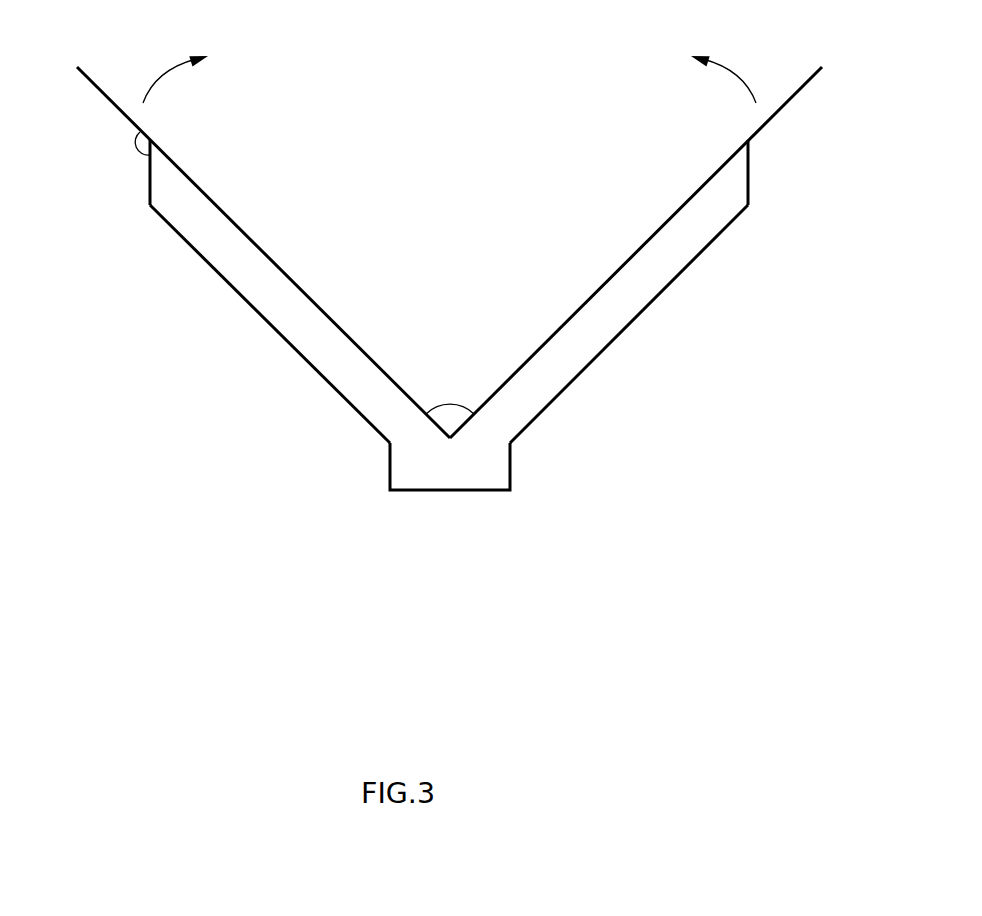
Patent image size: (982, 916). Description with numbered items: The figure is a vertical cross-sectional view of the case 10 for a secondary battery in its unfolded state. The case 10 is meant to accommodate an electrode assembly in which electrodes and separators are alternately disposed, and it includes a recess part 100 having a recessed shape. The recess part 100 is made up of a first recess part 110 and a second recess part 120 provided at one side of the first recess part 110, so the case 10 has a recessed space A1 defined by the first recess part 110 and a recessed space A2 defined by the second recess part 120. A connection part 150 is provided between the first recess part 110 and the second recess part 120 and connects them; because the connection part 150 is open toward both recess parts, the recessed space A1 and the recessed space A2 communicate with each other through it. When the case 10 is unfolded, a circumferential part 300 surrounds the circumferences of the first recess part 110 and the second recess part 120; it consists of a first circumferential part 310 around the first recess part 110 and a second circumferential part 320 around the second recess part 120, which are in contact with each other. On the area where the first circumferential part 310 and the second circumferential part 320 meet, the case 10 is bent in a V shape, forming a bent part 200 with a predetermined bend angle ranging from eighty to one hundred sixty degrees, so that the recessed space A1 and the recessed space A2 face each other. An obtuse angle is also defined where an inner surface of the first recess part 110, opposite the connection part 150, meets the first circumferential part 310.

The case 10 is at (228, 397).
The recess part 100 is at (753, 547).
The first recess part 110 is at (238, 293).
The second recess part 120 is at (661, 293).
The connection part 150 is at (390, 468).
The bent part 200 is at (450, 437).
The circumferential part 300 is at (753, 452).
The first circumferential part 310 is at (178, 168).
The second circumferential part 320 is at (721, 168).
The recessed space A1 is at (278, 287).
The recessed space A2 is at (621, 287).